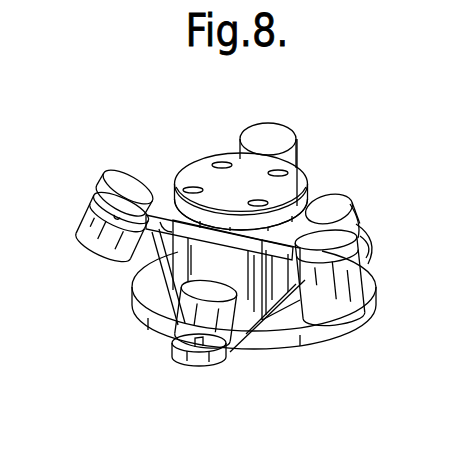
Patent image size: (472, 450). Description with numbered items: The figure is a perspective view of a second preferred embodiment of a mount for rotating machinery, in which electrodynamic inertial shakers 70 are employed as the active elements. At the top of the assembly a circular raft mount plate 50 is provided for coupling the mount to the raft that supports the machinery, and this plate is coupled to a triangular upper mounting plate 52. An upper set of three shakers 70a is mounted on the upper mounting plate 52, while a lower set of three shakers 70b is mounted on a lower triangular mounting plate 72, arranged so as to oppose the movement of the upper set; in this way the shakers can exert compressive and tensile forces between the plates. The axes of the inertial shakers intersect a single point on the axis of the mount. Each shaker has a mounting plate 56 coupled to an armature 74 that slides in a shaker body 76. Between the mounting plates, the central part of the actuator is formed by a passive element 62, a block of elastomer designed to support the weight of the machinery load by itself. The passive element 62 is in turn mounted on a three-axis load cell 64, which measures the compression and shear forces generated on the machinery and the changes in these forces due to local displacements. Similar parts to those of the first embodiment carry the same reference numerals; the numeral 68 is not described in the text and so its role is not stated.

The circular raft mount plate 50 is at (296, 184).
The upper mounting plate 52 is at (316, 229).
The mounting plate 56 is at (272, 133).
The passive element 62 is at (142, 266).
The three-axis load cell 64 is at (245, 350).
The top plate 68 is at (186, 176).
The electrodynamic inertial shaker 70 is at (299, 167).
The upper set of shakers 70a is at (257, 124).
The lower set of shakers 70b is at (350, 198).
The lower triangular mounting plate 72 is at (265, 351).
The armature 74 is at (95, 201).
The shaker body 76 is at (79, 226).